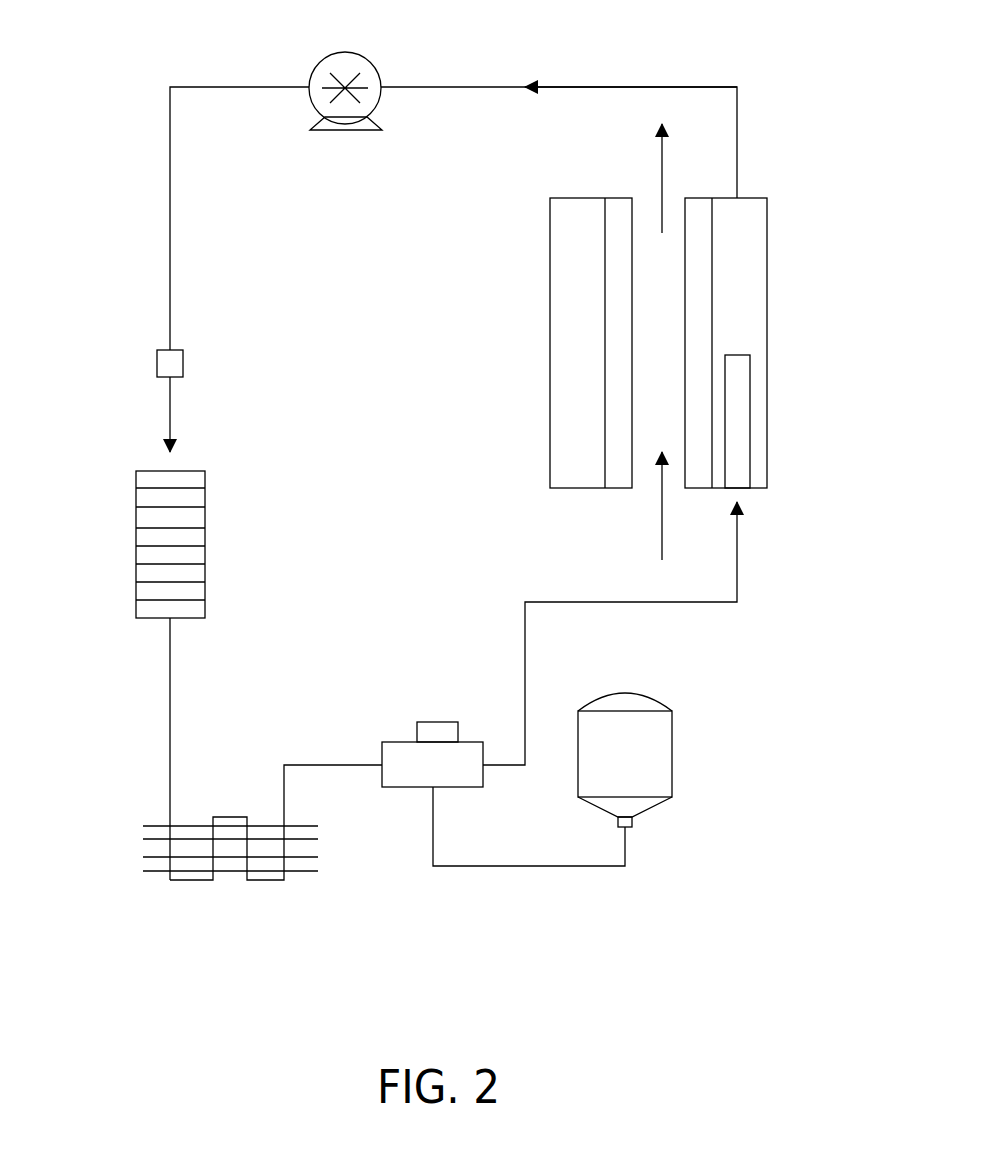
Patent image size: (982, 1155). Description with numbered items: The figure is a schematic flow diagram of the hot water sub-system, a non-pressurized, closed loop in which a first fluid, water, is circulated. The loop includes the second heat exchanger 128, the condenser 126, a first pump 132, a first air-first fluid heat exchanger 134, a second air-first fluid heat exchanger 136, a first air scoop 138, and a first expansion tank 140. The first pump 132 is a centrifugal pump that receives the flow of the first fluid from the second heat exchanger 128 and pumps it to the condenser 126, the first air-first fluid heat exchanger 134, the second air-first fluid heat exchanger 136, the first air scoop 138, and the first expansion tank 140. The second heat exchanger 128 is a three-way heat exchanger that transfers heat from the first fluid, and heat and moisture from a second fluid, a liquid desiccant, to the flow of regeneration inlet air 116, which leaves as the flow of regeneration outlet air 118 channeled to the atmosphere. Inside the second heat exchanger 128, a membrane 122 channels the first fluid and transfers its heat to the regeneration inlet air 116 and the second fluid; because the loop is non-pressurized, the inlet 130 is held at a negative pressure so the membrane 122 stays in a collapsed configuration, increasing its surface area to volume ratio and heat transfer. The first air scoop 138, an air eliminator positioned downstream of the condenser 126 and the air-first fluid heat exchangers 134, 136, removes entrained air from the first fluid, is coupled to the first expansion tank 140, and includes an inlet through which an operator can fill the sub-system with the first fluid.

The regeneration inlet air 116 is at (660, 175).
The regeneration outlet air 118 is at (658, 512).
The membrane 122 is at (752, 433).
The condenser 126 is at (135, 590).
The second heat exchanger 128 is at (767, 310).
The inlet 130 is at (740, 490).
The first pump 132 is at (338, 52).
The first air-first fluid heat exchanger 134 is at (157, 365).
The second air-first fluid heat exchanger 136 is at (162, 826).
The first air scoop 138 is at (400, 742).
The first expansion tank 140 is at (650, 752).